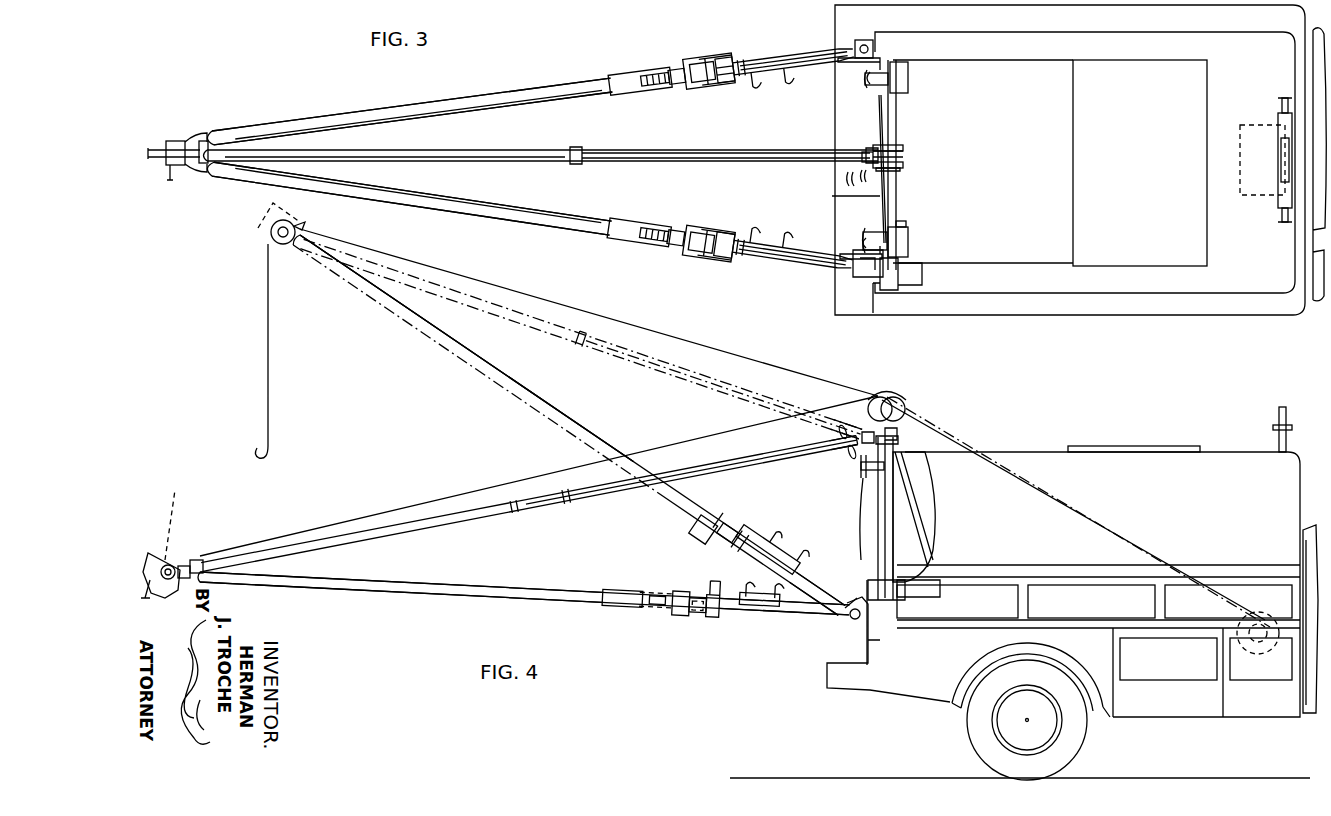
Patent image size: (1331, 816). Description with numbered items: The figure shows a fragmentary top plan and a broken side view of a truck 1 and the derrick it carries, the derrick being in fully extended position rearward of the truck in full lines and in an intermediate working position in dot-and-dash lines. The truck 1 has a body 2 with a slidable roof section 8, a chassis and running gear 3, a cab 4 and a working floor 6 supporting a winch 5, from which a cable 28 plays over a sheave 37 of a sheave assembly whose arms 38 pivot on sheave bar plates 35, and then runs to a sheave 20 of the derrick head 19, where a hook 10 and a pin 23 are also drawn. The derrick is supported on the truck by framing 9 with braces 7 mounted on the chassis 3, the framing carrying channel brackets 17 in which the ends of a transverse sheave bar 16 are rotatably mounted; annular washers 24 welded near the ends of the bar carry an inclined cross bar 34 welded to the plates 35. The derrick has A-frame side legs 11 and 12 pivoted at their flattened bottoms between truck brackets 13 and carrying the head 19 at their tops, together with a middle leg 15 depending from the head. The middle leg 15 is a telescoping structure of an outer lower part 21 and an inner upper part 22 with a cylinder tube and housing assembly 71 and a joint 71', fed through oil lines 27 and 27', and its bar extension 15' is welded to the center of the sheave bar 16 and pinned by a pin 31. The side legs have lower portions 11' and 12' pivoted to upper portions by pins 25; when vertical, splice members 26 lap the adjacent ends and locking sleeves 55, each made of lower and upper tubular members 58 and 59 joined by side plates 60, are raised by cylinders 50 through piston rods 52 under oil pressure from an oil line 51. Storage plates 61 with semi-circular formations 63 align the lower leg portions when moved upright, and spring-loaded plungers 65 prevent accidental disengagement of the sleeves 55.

In FIG. 3, the truck 1 is at (1283, 321).
In FIG. 4, the truck 1 is at (1221, 447).
In FIG. 3, the body 2 is at (1094, 307).
In FIG. 4, the body 2 is at (1026, 455).
In FIG. 4, the chassis and running gear 3 is at (958, 718).
In FIG. 3, the cab 4 is at (1313, 236).
In FIG. 4, the cab 4 is at (1304, 532).
In FIG. 3, the winch 5 is at (1250, 124).
In FIG. 4, the winch 5 is at (1246, 619).
In FIG. 3, the working floor 6 is at (832, 194).
In FIG. 4, the braces 7 is at (930, 492).
In FIG. 3, the slidable roof section 8 is at (1172, 262).
In FIG. 4, the slidable roof section 8 is at (1148, 447).
In FIG. 3, the framing 9 is at (899, 63).
In FIG. 4, the framing 9 is at (879, 526).
In FIG. 4, the hook 10 is at (297, 220).
In FIG. 3, the A-frame side leg 11 is at (412, 210).
In FIG. 4, the A-frame side leg 11 is at (525, 425).
In FIG. 3, the lower portion of side leg 11' is at (792, 266).
In FIG. 4, the lower portion of side leg 11' is at (791, 607).
In FIG. 3, the A-frame side leg 12 is at (412, 103).
In FIG. 3, the lower portion of side leg 12' is at (794, 42).
In FIG. 3, the truck brackets 13 is at (874, 46).
In FIG. 4, the truck brackets 13 is at (852, 640).
In FIG. 3, the middle leg 15 is at (541, 140).
In FIG. 4, the middle leg 15 is at (531, 405).
In FIG. 4, the bar extension 15' is at (855, 409).
In FIG. 3, the sheave bar 16 is at (897, 121).
In FIG. 4, the sheave bar 16 is at (899, 442).
In FIG. 3, the channel brackets 17 is at (909, 73).
In FIG. 4, the channel brackets 17 is at (898, 431).
In FIG. 3, the derrick head 19 is at (172, 132).
In FIG. 4, the derrick head 19 is at (278, 248).
In FIG. 3, the sheave 20 is at (170, 166).
In FIG. 4, the sheave 20 is at (258, 229).
In FIG. 3, the outer lower part 21 is at (698, 150).
In FIG. 4, the outer lower part 21 is at (762, 395).
In FIG. 3, the inner upper part 22 is at (205, 140).
In FIG. 4, the inner upper part 22 is at (198, 562).
In FIG. 3, the pin 23 is at (158, 146).
In FIG. 4, the pin 23 is at (152, 594).
In FIG. 3, the annular washers 24 is at (900, 224).
In FIG. 4, the pins 25 is at (642, 597).
In FIG. 3, the splice members 26 is at (610, 77).
In FIG. 4, the splice members 26 is at (607, 614).
In FIG. 3, the oil line 27 is at (864, 184).
In FIG. 4, the oil line 27 is at (844, 472).
In FIG. 4, the oil line 27' is at (828, 454).
In FIG. 4, the cable 28 is at (464, 273).
In FIG. 3, the pin 31 is at (873, 154).
In FIG. 4, the pin 31 is at (866, 432).
In FIG. 3, the cross bar 34 is at (880, 197).
In FIG. 3, the sheave bar plates 35 is at (908, 147).
In FIG. 3, the sheave 37 is at (905, 160).
In FIG. 4, the sheave 37 is at (902, 405).
In FIG. 3, the sheave assembly arms 38 is at (905, 150).
In FIG. 3, the cylinders 50 is at (768, 70).
In FIG. 4, the cylinders 50 is at (787, 543).
In FIG. 3, the oil line 51 is at (786, 82).
In FIG. 4, the oil line 51 is at (803, 553).
In FIG. 3, the piston rod 52 is at (741, 76).
In FIG. 4, the piston rod 52 is at (752, 537).
In FIG. 3, the locking sleeve 55 is at (719, 90).
In FIG. 4, the locking sleeve 55 is at (731, 517).
In FIG. 3, the lower tubular member 58 is at (733, 62).
In FIG. 4, the lower tubular member 58 is at (708, 624).
In FIG. 3, the upper tubular member 59 is at (702, 75).
In FIG. 4, the upper tubular member 59 is at (700, 524).
In FIG. 3, the side plates 60 is at (691, 91).
In FIG. 4, the side plates 60 is at (691, 593).
In FIG. 3, the storage plate 61 is at (888, 78).
In FIG. 4, the storage plate 61 is at (884, 471).
In FIG. 3, the semi-circular formation 63 is at (868, 85).
In FIG. 4, the semi-circular formation 63 is at (860, 486).
In FIG. 3, the plunger 65 is at (721, 57).
In FIG. 4, the plunger 65 is at (688, 582).
In FIG. 3, the operating cylinder tube and housing assembly 71 is at (563, 138).
In FIG. 4, the operating cylinder tube and housing assembly 71 is at (540, 393).
In FIG. 4, the joint 71' is at (586, 396).